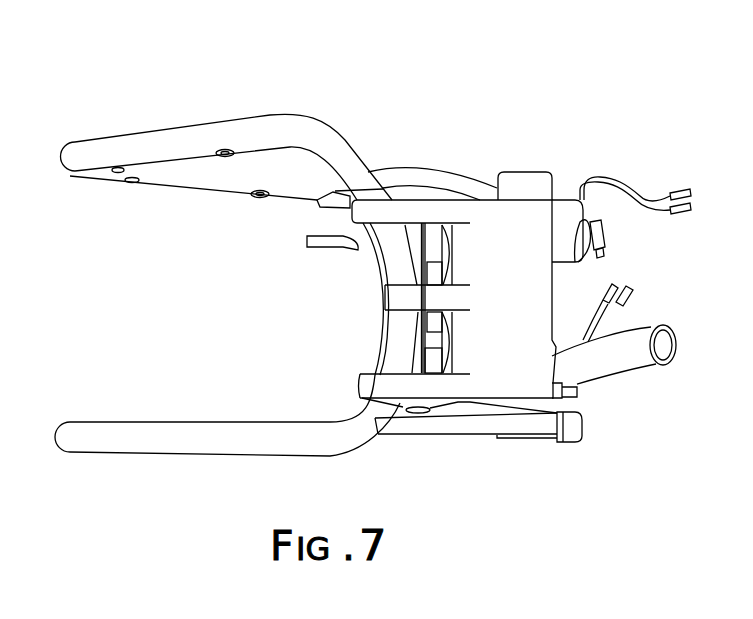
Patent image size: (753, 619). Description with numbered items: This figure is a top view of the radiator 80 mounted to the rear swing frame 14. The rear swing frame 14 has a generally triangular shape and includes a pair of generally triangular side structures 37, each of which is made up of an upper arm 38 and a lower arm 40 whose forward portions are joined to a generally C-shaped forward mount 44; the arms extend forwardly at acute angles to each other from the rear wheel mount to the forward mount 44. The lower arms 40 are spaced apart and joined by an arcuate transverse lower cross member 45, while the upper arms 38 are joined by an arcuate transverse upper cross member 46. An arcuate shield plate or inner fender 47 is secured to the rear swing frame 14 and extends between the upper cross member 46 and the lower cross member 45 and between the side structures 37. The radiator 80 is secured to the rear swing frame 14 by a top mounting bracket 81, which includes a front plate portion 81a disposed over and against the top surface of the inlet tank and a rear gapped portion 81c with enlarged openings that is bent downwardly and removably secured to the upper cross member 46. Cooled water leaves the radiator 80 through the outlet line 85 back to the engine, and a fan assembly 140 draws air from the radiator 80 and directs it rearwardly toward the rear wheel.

The rear swing frame 14 is at (133, 477).
The side structure 37 is at (357, 133).
The upper arm 38 is at (188, 133).
The lower arm 40 is at (203, 182).
The forward mount 44 is at (447, 427).
The lower cross member 45 is at (345, 207).
The upper cross member 46 is at (363, 175).
The inner fender 47 is at (372, 258).
The radiator 80 is at (503, 410).
The top mounting bracket 81 is at (562, 230).
The front plate portion 81a is at (533, 297).
The rear gapped portion 81c is at (433, 213).
The outlet line 85 is at (618, 363).
The fan assembly 140 is at (433, 336).